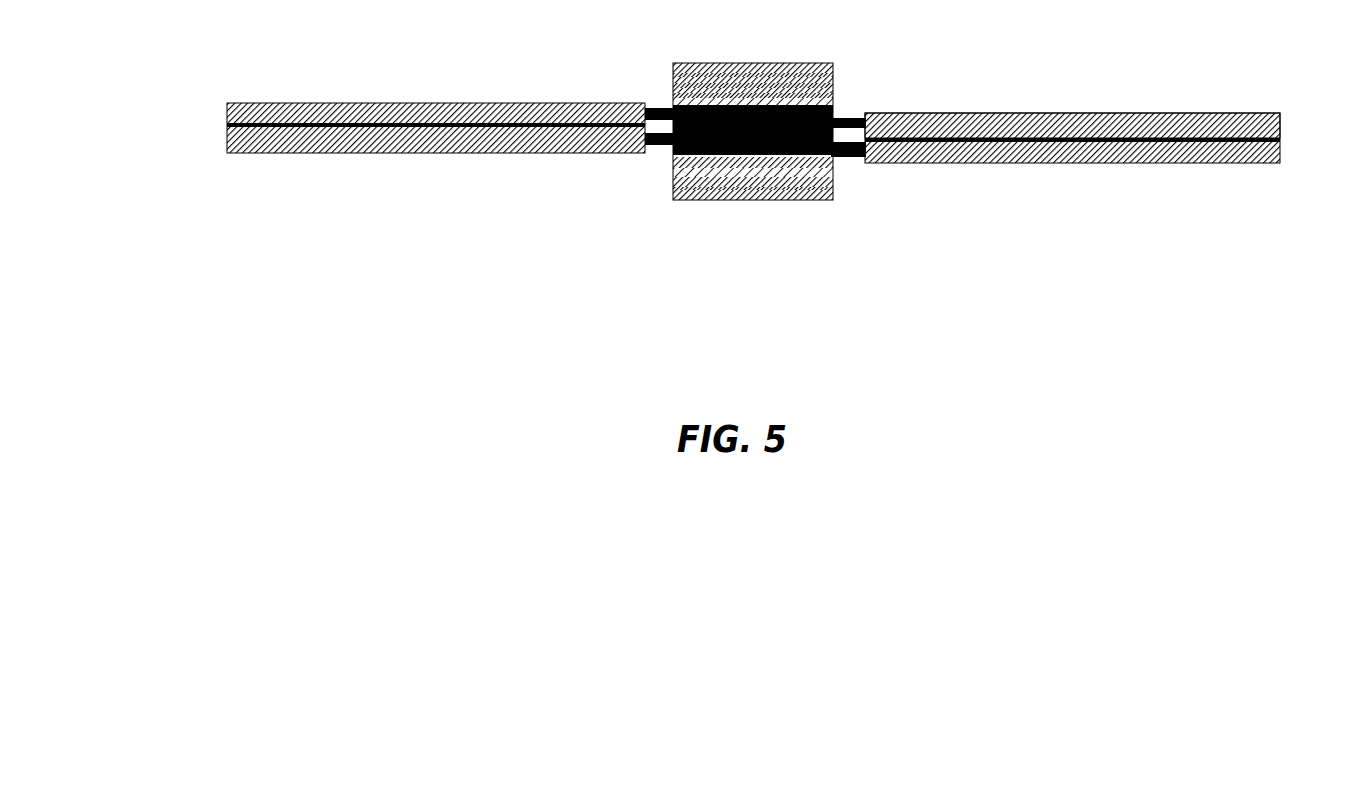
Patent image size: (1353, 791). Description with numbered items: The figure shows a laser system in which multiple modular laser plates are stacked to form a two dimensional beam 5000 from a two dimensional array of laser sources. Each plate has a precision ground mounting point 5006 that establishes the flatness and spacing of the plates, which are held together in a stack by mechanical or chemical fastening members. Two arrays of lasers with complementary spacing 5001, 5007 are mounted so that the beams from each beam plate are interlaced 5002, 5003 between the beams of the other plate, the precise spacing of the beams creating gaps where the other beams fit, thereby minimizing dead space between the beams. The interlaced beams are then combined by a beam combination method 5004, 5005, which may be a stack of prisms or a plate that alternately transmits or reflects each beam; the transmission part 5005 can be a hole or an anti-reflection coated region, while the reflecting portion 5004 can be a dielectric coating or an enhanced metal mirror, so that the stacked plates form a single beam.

The two dimensional beam 5000 is at (738, 139).
The laser array 5001 is at (315, 100).
The interlaced beam gap 5002 is at (665, 103).
The interlaced beam gap 5003 is at (848, 160).
The reflecting portion 5004 is at (836, 70).
The transmission part 5005 is at (836, 84).
The precision ground mounting point 5006 is at (227, 125).
The laser array 5007 is at (1205, 112).